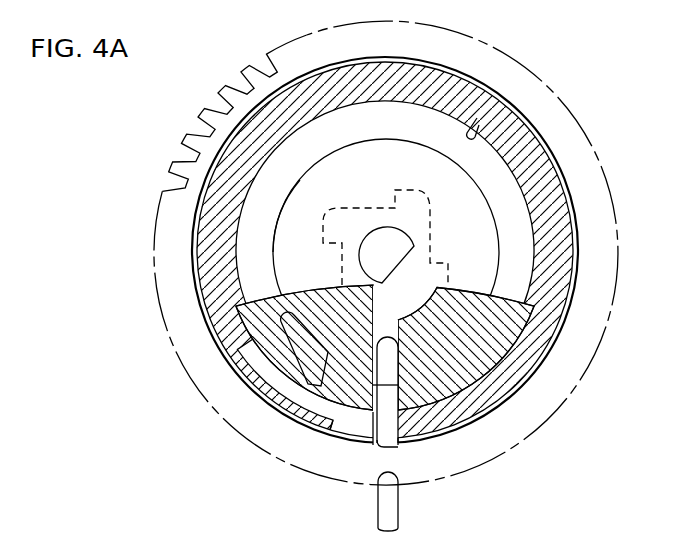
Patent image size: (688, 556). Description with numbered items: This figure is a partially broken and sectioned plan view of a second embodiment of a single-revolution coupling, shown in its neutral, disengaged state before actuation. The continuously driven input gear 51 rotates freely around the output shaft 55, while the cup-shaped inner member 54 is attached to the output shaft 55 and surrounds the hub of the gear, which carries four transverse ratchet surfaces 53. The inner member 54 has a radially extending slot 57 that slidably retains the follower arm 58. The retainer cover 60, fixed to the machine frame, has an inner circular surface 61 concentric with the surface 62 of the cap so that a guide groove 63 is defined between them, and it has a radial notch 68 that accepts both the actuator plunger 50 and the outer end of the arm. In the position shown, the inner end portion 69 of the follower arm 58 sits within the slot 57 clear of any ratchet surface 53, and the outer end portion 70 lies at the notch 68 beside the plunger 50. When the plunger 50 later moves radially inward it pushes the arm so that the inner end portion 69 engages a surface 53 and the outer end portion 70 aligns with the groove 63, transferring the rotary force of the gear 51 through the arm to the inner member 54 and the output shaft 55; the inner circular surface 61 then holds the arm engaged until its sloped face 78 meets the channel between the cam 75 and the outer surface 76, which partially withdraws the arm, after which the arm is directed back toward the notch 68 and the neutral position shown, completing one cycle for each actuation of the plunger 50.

The plunger 50 is at (398, 510).
The gear 51 is at (588, 173).
The ratchet surface 53 is at (364, 289).
The inner member 54 is at (290, 208).
The output shaft 55 is at (378, 237).
The slot 57 is at (398, 400).
The follower arm 58 is at (378, 413).
The retainer cover 60 is at (553, 288).
The inner circular surface 61 is at (473, 129).
The surface 62 is at (470, 173).
The guide groove 63 is at (498, 180).
The radial notch 68 is at (340, 432).
The inner end portion 69 is at (390, 366).
The outer end portion 70 is at (382, 440).
The cam 75 is at (297, 342).
The outer surface 76 is at (292, 420).
The sloped face 78 is at (397, 443).